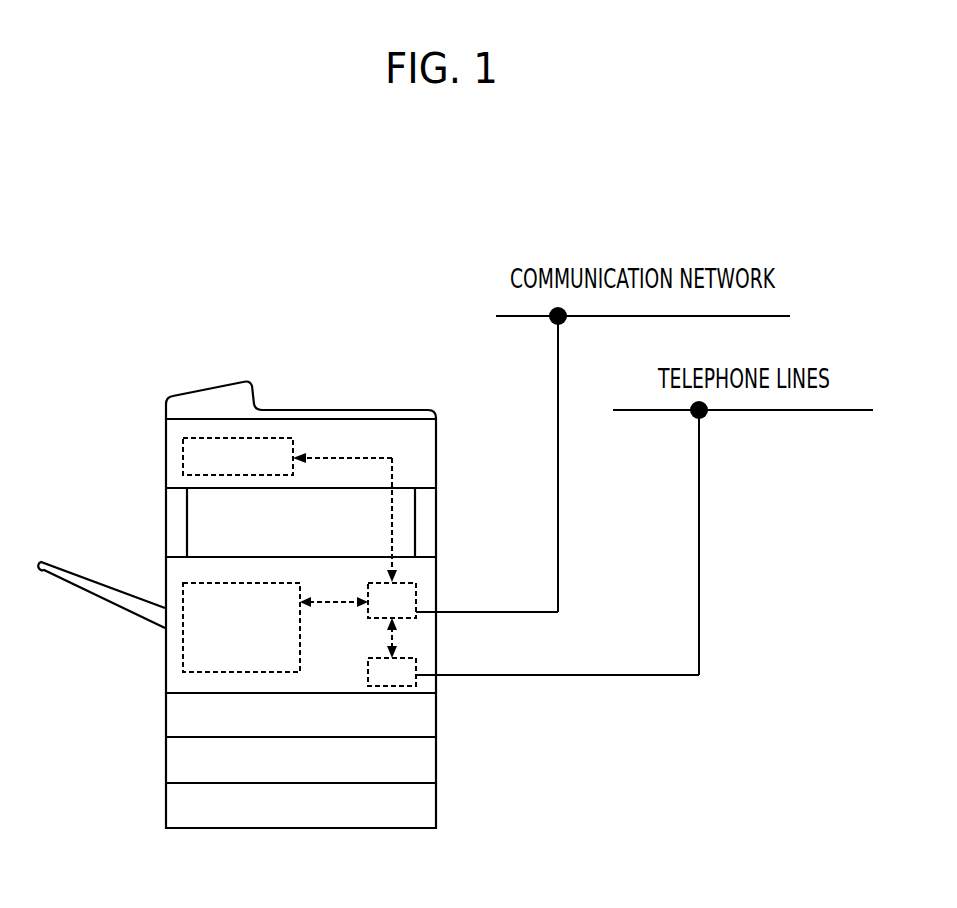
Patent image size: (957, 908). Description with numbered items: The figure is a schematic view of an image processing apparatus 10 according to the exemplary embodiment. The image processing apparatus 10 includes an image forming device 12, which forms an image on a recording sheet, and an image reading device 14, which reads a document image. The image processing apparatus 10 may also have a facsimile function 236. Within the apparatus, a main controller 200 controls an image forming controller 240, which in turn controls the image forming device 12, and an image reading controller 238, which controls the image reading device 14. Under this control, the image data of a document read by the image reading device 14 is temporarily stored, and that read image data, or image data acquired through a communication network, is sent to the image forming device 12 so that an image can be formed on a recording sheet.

The image processing apparatus 10 is at (208, 331).
The image forming device 12 is at (165, 637).
The image reading device 14 is at (165, 430).
The main controller 200 is at (417, 589).
The facsimile function 236 is at (417, 683).
The image reading controller 238 is at (184, 465).
The image forming controller 240 is at (183, 659).